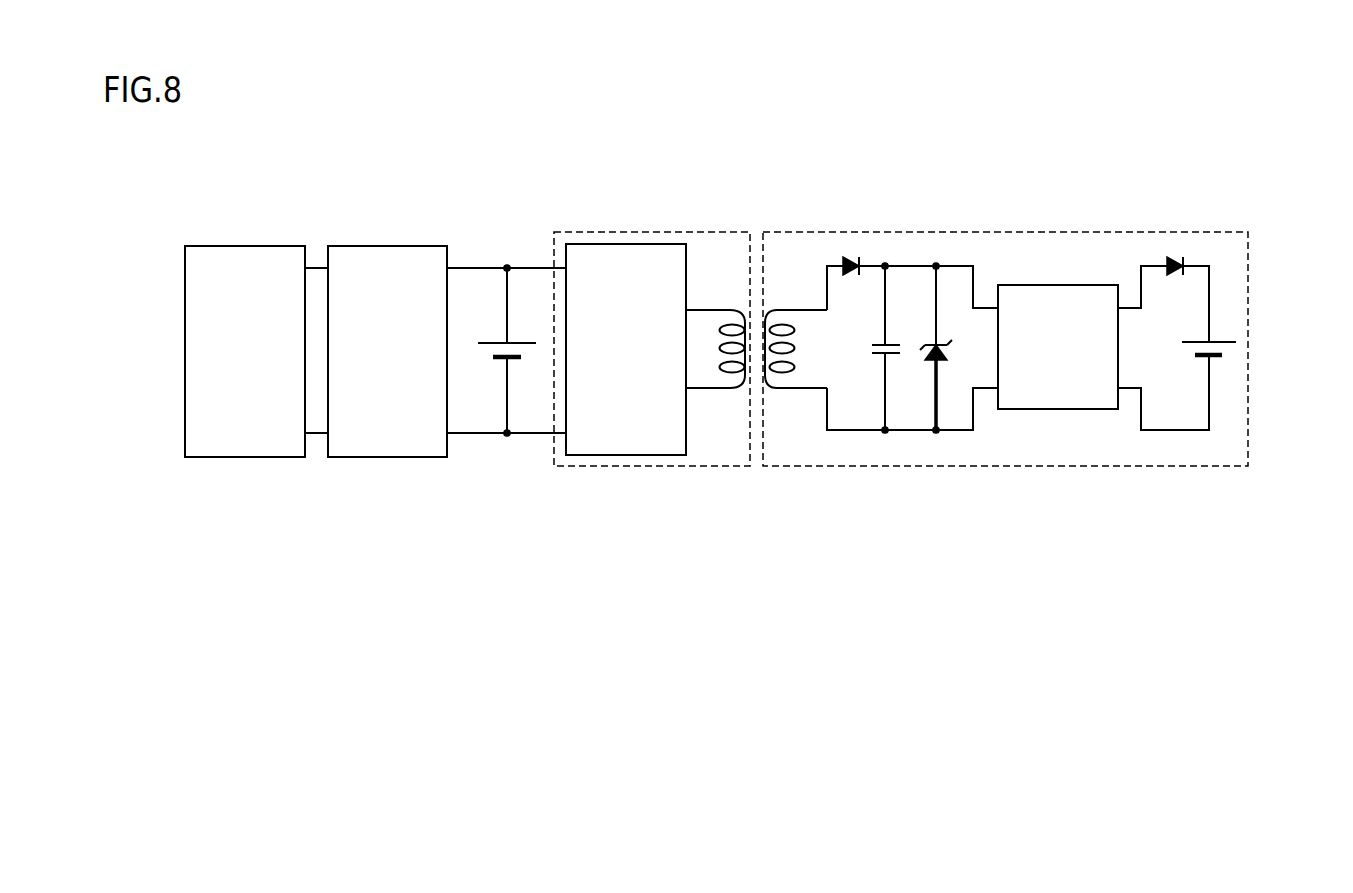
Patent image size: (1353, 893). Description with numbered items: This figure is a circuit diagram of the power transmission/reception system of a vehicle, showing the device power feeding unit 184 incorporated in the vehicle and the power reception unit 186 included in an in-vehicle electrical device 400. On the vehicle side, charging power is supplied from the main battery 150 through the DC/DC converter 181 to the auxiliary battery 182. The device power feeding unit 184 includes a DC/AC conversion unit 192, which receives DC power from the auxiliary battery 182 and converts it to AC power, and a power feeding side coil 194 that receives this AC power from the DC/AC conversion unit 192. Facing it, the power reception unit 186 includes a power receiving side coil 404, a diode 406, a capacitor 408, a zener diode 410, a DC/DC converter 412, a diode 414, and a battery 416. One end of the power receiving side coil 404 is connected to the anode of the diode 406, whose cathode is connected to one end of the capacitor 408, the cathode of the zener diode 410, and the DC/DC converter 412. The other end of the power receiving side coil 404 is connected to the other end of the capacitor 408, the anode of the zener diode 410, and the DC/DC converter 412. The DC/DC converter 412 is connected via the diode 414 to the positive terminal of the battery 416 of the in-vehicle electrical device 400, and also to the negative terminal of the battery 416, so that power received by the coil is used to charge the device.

The main battery 150 is at (246, 246).
The DC/DC converter 181 is at (388, 246).
The auxiliary battery 182 is at (520, 343).
The device power feeding unit 184 is at (710, 232).
The power reception unit 186 is at (1004, 232).
The DC/AC conversion unit 192 is at (622, 455).
The power feeding side coil 194 is at (727, 390).
The in-vehicle electrical device 400 is at (774, 224).
The power receiving side coil 404 is at (782, 390).
The diode 406 is at (845, 265).
The capacitor 408 is at (878, 358).
The zener diode 410 is at (942, 360).
The DC/DC converter 412 is at (1057, 409).
The diode 414 is at (1167, 262).
The battery 416 is at (1222, 338).